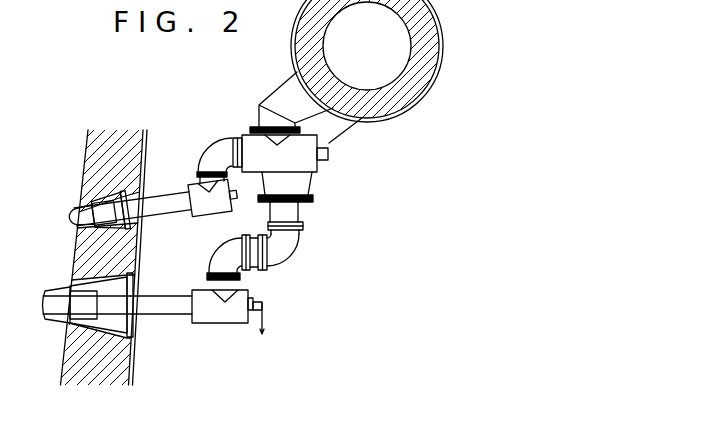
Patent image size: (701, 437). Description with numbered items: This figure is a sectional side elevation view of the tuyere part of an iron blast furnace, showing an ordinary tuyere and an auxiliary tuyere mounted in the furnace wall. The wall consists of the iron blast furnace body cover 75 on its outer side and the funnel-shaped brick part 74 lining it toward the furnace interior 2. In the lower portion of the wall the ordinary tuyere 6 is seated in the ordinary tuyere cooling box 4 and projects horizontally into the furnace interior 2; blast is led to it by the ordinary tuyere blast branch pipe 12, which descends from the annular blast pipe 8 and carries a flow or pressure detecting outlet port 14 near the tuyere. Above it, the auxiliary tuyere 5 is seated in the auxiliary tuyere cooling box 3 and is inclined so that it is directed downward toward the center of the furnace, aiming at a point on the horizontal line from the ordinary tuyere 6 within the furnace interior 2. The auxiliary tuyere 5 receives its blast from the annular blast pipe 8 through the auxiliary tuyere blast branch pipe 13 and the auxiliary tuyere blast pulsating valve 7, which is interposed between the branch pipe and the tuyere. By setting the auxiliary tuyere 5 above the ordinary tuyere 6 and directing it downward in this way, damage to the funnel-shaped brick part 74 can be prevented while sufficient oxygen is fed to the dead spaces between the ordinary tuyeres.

The furnace interior 2 is at (56, 261).
The auxiliary tuyere cooling box 3 is at (82, 202).
The ordinary tuyere cooling box 4 is at (72, 289).
The auxiliary tuyere 5 is at (173, 211).
The ordinary tuyere 6 is at (172, 315).
The auxiliary tuyere blast pulsating valve 7 is at (313, 167).
The annular blast pipe 8 is at (443, 49).
The ordinary tuyere blast branch pipe 12 is at (303, 221).
The auxiliary tuyere blast branch pipe 13 is at (272, 94).
The flow or pressure detecting outlet port 14 is at (263, 317).
The funnel-shaped brick part 74 is at (84, 166).
The iron blast furnace body cover 75 is at (146, 151).